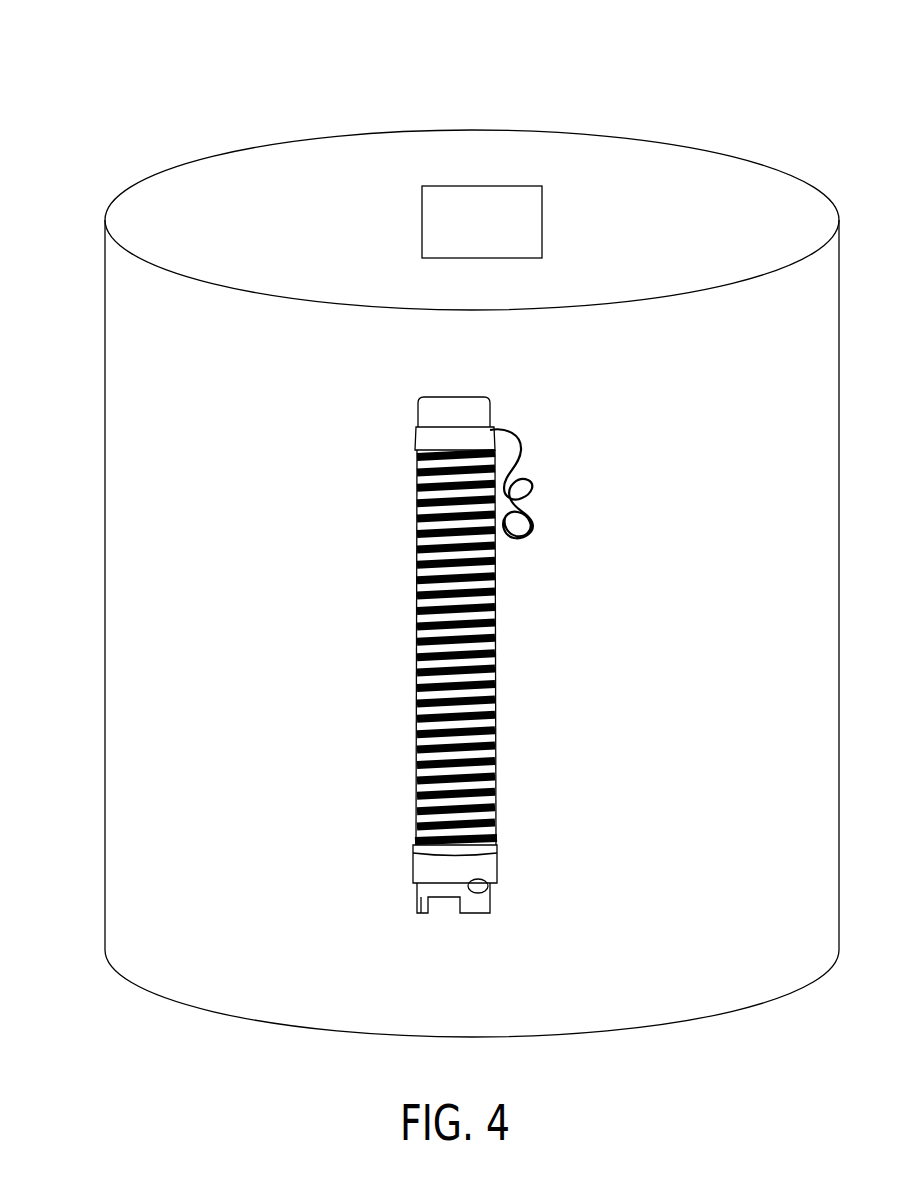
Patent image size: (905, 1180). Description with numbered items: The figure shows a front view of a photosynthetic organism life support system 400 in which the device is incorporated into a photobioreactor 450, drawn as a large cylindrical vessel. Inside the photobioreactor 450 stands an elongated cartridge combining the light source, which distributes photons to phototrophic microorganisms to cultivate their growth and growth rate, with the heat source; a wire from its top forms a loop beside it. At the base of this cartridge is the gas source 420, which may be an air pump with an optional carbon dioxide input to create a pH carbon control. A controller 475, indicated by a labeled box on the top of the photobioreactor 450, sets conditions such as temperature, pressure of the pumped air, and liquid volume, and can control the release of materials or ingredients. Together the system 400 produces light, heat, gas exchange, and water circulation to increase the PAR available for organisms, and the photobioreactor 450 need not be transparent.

The system 400 is at (84, 94).
The photobioreactor 450 is at (766, 183).
The controller 475 is at (487, 236).
The gas source 420 is at (505, 905).